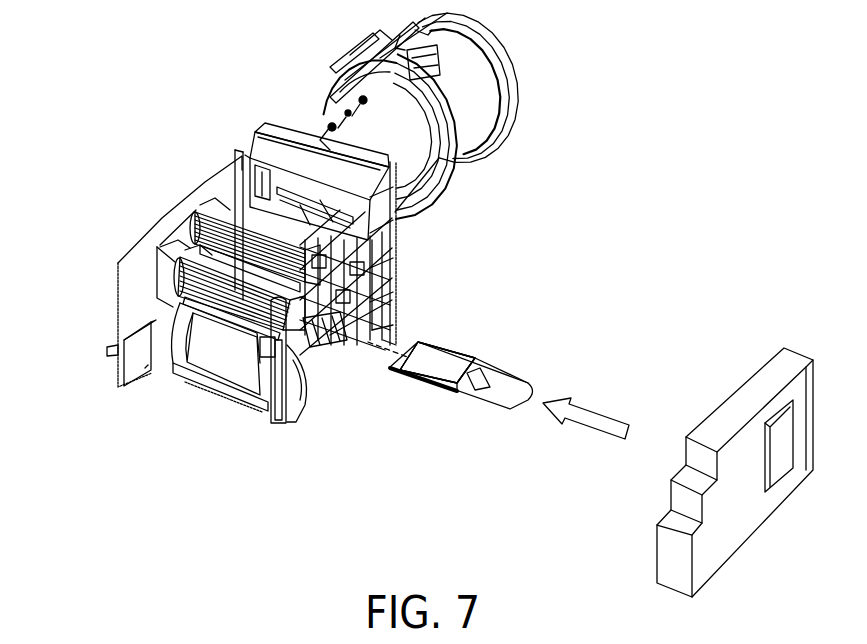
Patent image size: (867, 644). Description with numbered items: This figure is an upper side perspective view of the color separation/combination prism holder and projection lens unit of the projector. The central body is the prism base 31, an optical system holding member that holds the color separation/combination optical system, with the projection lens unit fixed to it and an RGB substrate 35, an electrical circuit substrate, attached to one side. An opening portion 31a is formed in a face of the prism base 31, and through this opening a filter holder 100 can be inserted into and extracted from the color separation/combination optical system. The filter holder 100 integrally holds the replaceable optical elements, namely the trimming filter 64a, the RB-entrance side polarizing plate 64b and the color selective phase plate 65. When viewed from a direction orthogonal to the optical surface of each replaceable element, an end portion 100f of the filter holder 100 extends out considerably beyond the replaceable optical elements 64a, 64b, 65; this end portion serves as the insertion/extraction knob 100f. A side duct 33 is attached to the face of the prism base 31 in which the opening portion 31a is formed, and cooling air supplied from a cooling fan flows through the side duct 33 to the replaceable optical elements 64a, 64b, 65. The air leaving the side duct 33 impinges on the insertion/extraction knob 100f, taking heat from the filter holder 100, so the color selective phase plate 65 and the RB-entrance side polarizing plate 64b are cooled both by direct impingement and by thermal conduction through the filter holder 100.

The prism base 31 is at (268, 401).
The opening portion 31a is at (310, 332).
The side duct 33 is at (793, 360).
The RGB substrate 35 is at (115, 281).
The trimming filter 64a is at (448, 358).
The RB-entrance side polarizing plate 64b is at (513, 316).
The color selective phase plate 65 is at (513, 316).
The filter holder 100 is at (519, 425).
The insertion/extraction knob 100f is at (505, 387).